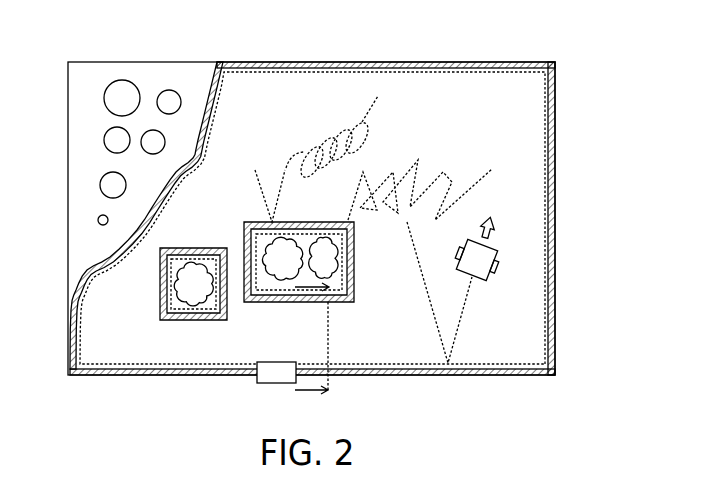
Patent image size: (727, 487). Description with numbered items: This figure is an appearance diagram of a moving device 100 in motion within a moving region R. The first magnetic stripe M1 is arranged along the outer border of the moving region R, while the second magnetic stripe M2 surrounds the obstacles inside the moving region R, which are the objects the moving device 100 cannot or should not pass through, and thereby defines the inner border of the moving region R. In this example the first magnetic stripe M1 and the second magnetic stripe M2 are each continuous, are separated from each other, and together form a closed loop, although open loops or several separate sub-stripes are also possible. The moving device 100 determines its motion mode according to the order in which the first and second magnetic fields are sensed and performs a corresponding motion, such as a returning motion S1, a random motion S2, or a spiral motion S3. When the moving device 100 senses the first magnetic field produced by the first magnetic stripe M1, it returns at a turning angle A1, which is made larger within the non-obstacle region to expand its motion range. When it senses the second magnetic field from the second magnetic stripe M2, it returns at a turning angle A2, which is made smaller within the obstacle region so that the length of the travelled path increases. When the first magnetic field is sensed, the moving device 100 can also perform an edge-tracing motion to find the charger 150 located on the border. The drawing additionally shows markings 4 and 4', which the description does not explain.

The first magnetic stripe M1 is at (556, 122).
The moving region R is at (547, 150).
The second magnetic stripe M2 is at (193, 320).
The flow direction of particles 4 is at (310, 306).
The external flow direction 4' is at (311, 361).
The charger 150 is at (276, 372).
The turning angle A2 is at (254, 168).
The spiral motion S3 is at (369, 99).
The random motion S2 is at (482, 173).
The turning angle A1 is at (433, 308).
The returning motion S1 is at (458, 343).
The moving device 100 is at (488, 253).